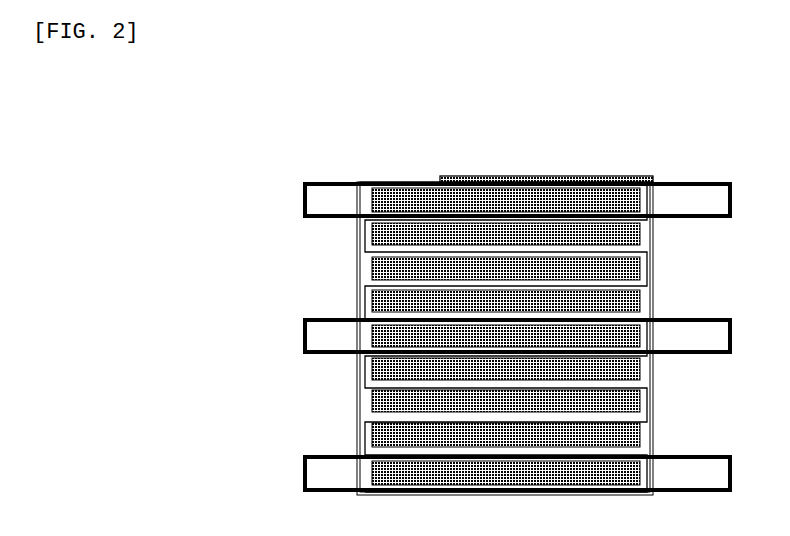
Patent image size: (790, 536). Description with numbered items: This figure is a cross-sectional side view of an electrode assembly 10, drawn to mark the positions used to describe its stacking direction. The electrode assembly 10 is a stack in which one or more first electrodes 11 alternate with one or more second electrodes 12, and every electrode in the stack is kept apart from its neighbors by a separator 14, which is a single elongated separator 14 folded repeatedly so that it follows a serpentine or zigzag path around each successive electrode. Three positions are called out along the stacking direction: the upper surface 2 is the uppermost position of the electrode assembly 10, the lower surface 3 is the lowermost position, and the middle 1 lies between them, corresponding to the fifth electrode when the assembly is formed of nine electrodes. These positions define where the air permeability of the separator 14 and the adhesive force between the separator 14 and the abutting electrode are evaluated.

The middle 1 is at (276, 344).
The upper surface 2 is at (276, 208).
The lower surface 3 is at (277, 480).
The electrode assembly 10 is at (529, 157).
The first electrode 11 is at (641, 305).
The second electrode 12 is at (641, 200).
The separator 14 is at (650, 262).